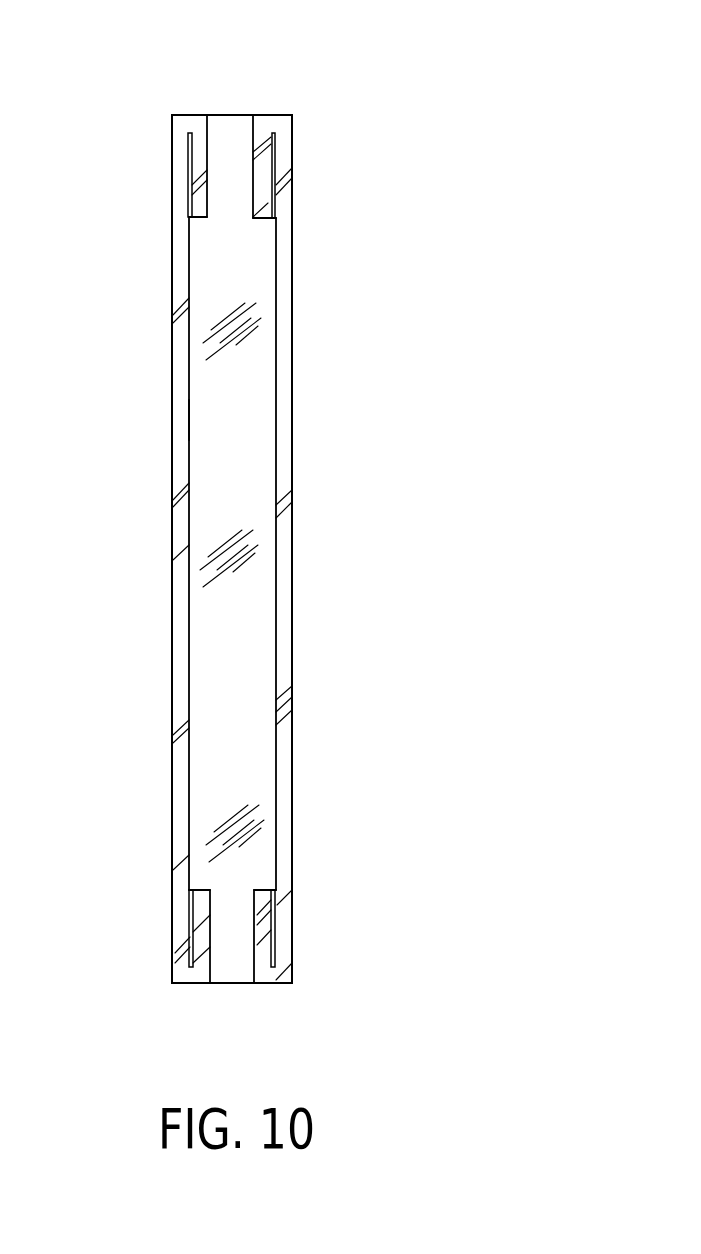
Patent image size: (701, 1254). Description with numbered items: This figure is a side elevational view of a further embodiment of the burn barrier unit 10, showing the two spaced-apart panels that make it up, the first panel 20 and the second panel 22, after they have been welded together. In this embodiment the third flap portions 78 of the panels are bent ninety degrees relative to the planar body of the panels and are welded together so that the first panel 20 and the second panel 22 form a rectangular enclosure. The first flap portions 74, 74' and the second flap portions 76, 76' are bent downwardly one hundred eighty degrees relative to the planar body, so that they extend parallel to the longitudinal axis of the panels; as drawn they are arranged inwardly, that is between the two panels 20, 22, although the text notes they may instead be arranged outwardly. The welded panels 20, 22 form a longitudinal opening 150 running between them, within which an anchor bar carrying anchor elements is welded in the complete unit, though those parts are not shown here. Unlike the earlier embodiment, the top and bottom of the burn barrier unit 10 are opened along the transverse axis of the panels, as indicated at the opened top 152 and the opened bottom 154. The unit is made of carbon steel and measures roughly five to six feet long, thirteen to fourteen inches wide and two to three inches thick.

The burn barrier unit 10 is at (316, 184).
The first panel 20 is at (306, 482).
The second panel 22 is at (172, 626).
The first flap portion 74 is at (283, 134).
The first flap portion 74' is at (213, 119).
The second flap portion 76 is at (311, 963).
The second flap portion 76' is at (202, 958).
The third flap portion 78 is at (248, 378).
The longitudinal opening 150 is at (190, 418).
The opened top 152 is at (227, 122).
The opened bottom 154 is at (230, 967).